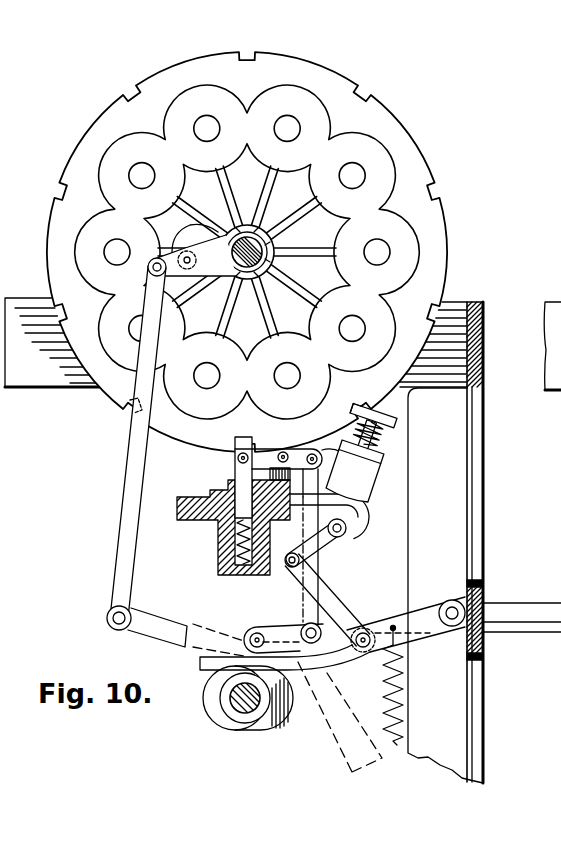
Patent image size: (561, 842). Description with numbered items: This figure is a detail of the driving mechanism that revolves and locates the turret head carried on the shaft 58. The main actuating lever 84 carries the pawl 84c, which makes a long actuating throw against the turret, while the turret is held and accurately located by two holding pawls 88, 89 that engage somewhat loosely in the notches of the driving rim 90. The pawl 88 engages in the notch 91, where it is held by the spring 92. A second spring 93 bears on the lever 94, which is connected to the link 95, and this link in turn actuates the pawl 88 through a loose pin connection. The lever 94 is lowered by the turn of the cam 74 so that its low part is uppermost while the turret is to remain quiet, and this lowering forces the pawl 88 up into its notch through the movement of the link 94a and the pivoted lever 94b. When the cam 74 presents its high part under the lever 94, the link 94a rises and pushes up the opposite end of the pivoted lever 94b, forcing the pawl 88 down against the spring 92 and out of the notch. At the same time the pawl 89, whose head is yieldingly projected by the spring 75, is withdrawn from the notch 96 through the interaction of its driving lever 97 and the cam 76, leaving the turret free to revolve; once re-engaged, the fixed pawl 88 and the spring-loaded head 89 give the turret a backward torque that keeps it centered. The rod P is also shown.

The pawl 84c is at (205, 235).
The shaft 58 is at (262, 247).
The driving rim 90 is at (137, 399).
The main actuating lever 84 is at (129, 446).
The holding pawl 88 is at (236, 466).
The notch 91 is at (246, 441).
The link 95 is at (285, 452).
The spring 92 is at (220, 548).
The notch 96 is at (358, 405).
The holding pawl 89 is at (376, 417).
The spring 75 is at (397, 427).
The pivoted lever 94b is at (384, 467).
The link 94a is at (305, 614).
The lever 94 is at (368, 615).
The pull rod P is at (521, 603).
The driving lever 97 is at (200, 669).
The cam 74 is at (212, 713).
The cam 76 is at (272, 728).
The spring 93 is at (383, 708).